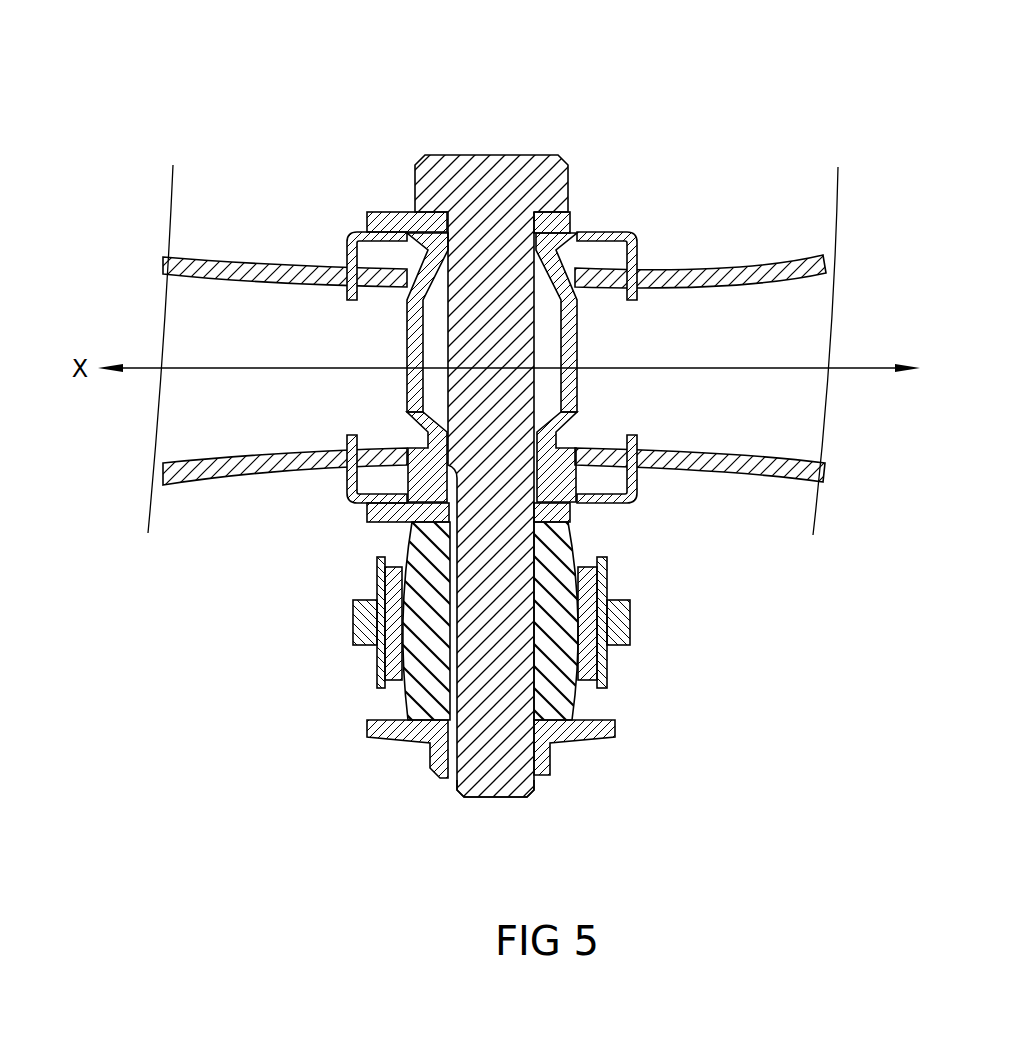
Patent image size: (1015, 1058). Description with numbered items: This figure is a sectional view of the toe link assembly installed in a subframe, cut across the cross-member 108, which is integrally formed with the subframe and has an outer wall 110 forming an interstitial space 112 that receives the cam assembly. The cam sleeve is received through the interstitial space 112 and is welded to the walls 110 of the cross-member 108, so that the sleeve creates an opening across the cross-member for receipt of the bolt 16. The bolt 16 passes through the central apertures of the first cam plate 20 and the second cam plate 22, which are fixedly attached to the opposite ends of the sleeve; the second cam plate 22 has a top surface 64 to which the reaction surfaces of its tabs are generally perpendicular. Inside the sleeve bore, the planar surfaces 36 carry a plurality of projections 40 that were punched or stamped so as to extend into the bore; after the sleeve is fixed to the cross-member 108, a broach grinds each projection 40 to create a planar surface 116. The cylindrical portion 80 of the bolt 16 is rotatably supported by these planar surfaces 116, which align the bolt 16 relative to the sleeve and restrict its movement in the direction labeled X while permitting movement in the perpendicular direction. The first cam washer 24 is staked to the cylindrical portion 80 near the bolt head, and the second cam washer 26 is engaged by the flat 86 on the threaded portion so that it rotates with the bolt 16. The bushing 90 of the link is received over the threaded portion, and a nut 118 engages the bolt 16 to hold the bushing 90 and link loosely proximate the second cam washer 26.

The bolt 16 is at (479, 148).
The first cam plate 20 is at (340, 231).
The second cam plate 22 is at (337, 504).
The first cam washer 24 is at (580, 206).
The second cam washer 26 is at (587, 519).
The planar surfaces 36 is at (425, 386).
The projections 40 is at (438, 445).
The top surface 64 is at (366, 500).
The cylindrical portion 80 is at (503, 385).
The flat 86 is at (458, 782).
The bushing 90 is at (398, 706).
The cross-member 108 is at (805, 241).
The outer wall 110 is at (735, 260).
The interstitial space 112 is at (800, 333).
The planar surface 116 is at (440, 297).
The nut 118 is at (615, 732).